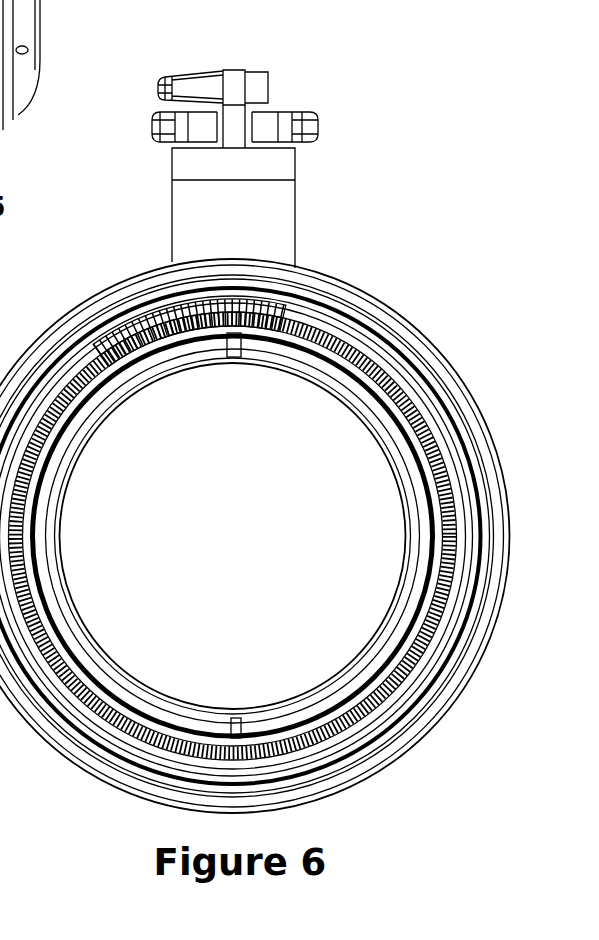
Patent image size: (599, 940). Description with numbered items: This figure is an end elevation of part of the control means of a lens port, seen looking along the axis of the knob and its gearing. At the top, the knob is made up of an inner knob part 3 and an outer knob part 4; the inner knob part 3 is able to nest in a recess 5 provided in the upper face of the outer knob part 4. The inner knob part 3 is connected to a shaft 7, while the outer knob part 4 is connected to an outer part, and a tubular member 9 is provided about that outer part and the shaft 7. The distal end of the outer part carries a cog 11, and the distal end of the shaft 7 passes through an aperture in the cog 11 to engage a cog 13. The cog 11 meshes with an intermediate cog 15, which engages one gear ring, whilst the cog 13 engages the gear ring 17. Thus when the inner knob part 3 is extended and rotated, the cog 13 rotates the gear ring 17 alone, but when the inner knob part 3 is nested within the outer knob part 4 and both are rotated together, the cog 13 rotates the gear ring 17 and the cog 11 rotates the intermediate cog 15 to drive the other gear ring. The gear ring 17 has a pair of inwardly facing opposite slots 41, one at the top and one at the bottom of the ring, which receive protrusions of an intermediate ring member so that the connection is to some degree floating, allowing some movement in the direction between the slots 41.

The inner knob part 3 is at (252, 83).
The outer knob part 4 is at (320, 121).
The recess 5 is at (262, 110).
The shaft 7 is at (235, 123).
The tubular member 9 is at (170, 215).
The cog 11 is at (292, 305).
The cog 13 is at (293, 315).
The intermediate cog 15 is at (98, 345).
The gear ring 17 is at (366, 358).
The slots 41 is at (237, 357).